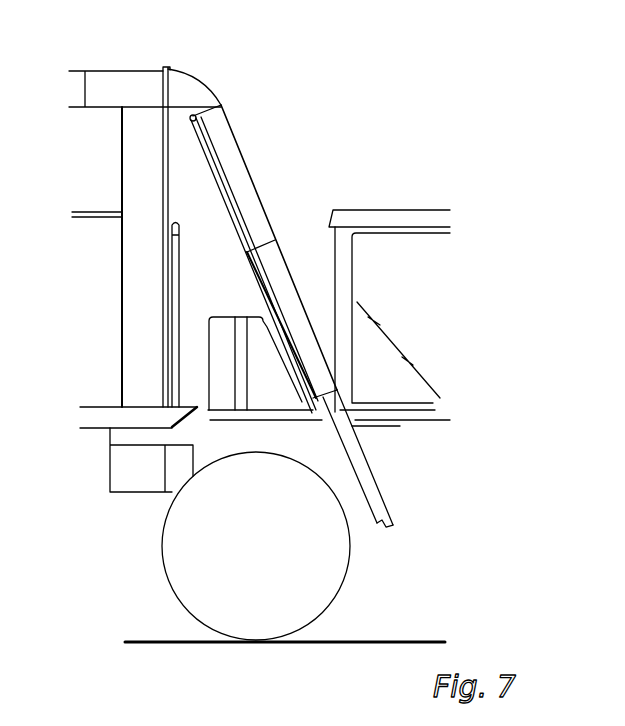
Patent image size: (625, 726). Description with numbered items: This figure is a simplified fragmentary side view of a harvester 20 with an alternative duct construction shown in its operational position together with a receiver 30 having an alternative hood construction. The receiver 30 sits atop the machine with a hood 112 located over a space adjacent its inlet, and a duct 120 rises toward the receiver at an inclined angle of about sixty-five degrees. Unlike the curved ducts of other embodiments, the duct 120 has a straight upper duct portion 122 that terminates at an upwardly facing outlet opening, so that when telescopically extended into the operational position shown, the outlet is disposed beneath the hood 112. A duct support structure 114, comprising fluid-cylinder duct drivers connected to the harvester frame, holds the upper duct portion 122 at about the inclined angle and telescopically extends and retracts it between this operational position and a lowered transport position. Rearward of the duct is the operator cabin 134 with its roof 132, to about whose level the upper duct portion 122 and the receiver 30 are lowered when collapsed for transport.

The harvester 20 is at (452, 72).
The receiver 30 is at (115, 70).
The hood 112 is at (197, 81).
The duct support structure 114 is at (251, 268).
The duct 120 is at (253, 182).
The upper duct portion 122 is at (307, 264).
The roof 132 is at (427, 210).
The operator cabin 134 is at (433, 418).